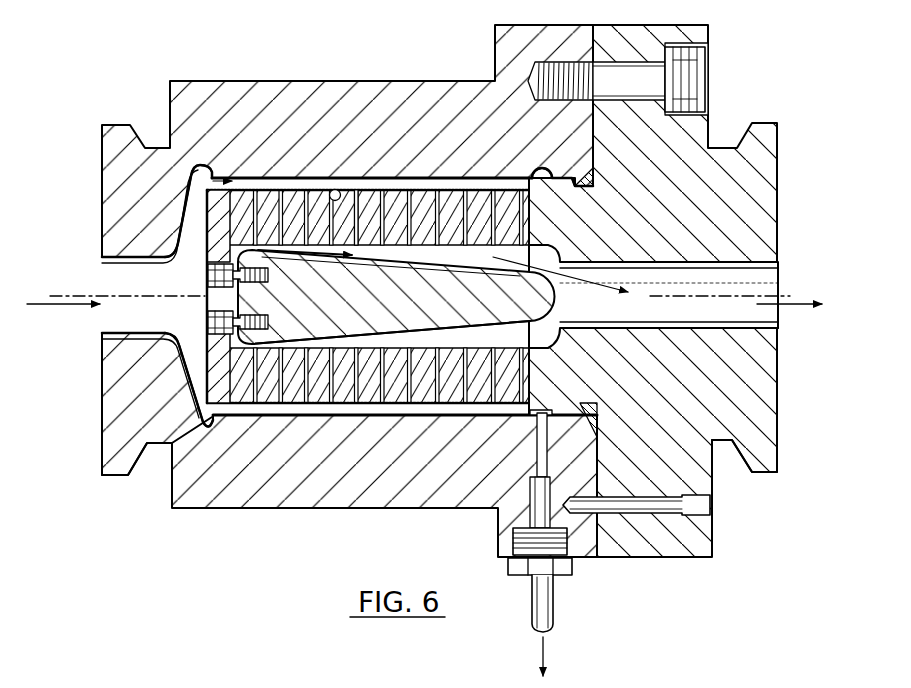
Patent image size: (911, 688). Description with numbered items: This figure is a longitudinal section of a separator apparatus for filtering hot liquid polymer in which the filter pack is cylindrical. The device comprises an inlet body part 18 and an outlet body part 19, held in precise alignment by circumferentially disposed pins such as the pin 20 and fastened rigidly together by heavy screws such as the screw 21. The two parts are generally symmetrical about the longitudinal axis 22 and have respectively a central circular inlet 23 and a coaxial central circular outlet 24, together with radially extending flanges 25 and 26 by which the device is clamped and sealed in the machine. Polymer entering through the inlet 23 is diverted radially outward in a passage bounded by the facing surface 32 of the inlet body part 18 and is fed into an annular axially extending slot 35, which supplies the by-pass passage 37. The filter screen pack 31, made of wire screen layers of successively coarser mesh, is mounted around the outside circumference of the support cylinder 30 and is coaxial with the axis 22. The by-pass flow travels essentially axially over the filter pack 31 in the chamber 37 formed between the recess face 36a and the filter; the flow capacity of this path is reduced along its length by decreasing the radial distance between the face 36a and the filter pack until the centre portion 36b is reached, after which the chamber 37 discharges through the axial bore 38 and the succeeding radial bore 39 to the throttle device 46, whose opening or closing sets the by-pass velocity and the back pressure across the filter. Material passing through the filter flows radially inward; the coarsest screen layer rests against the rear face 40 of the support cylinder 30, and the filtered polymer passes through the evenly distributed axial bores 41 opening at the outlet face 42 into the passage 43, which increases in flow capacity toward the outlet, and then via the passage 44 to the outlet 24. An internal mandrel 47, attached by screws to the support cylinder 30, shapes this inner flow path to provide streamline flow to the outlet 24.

The inlet body part 18 is at (122, 137).
The outlet body part 19 is at (767, 168).
The pin 20 is at (668, 515).
The heavy screw 21 is at (643, 62).
The longitudinal axis 22 is at (697, 297).
The central circular inlet 23 is at (110, 316).
The central circular outlet 24 is at (778, 266).
The radially extending flange 25 is at (110, 460).
The radially extending flange 26 is at (778, 460).
The support cylinder 30 is at (227, 392).
The filter screen pack 31 is at (293, 185).
The facing surface 32 is at (180, 382).
The annular axially extending slot 35 is at (173, 457).
The recess face 36a is at (290, 187).
The centre portion 36b is at (537, 173).
The cylindrical passage 37 is at (312, 182).
The axial bore 38 is at (535, 413).
The radial bore 39 is at (533, 483).
The rear face 40 is at (339, 190).
The axial bore 41 is at (520, 347).
The outlet face 42 is at (423, 240).
The passage 43 is at (392, 255).
The passage 44 is at (765, 313).
The throttle device 46 is at (340, 338).
The internal mandrel 47 is at (268, 320).